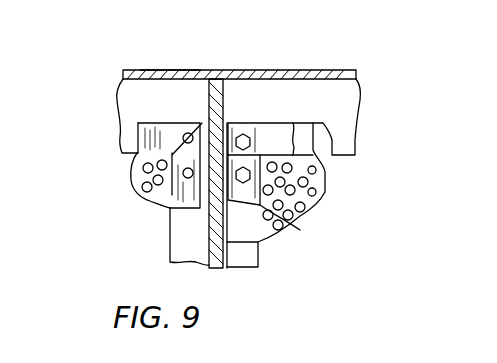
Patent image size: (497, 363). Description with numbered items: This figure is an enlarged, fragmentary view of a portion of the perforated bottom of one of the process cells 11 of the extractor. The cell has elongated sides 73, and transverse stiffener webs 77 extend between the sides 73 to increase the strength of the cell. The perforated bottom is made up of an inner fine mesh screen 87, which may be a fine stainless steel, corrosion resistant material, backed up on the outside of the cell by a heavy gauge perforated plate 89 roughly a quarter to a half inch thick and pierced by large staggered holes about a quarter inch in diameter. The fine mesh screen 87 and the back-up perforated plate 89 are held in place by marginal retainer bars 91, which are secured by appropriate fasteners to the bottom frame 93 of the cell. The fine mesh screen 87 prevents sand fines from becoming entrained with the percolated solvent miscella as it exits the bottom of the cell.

The process cell 11 is at (170, 62).
The elongated side 73 is at (276, 70).
The bottom frame 93 is at (118, 113).
The marginal retainer bar 91 is at (283, 140).
The perforated plate 89 is at (328, 188).
The fine mesh screen 87 is at (312, 210).
The transverse stiffener web 77 is at (209, 245).